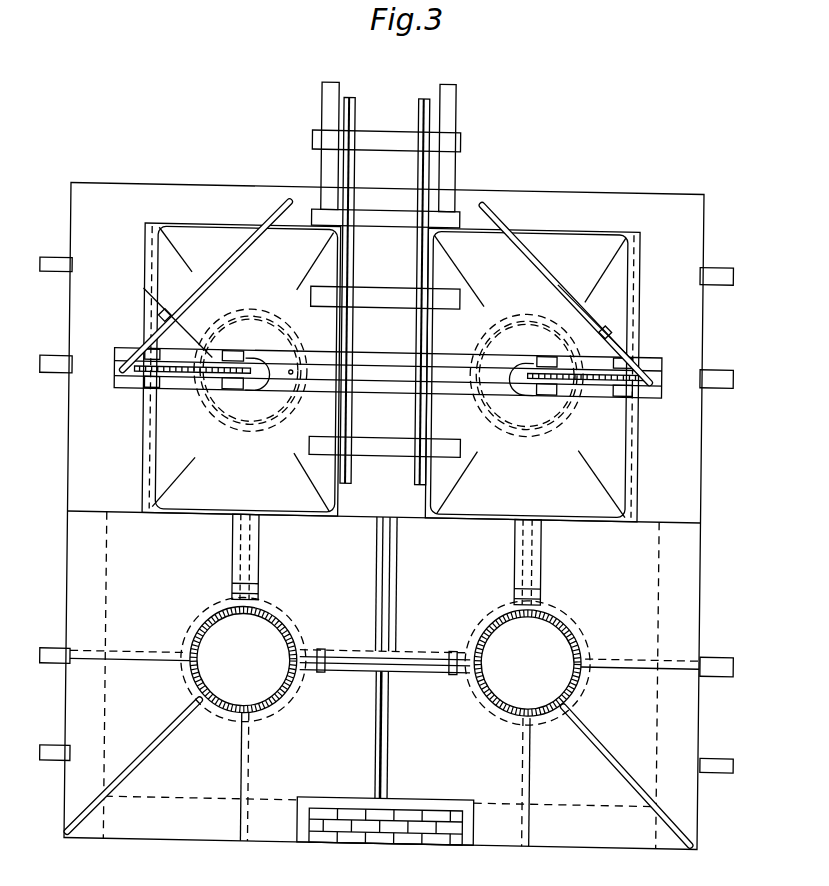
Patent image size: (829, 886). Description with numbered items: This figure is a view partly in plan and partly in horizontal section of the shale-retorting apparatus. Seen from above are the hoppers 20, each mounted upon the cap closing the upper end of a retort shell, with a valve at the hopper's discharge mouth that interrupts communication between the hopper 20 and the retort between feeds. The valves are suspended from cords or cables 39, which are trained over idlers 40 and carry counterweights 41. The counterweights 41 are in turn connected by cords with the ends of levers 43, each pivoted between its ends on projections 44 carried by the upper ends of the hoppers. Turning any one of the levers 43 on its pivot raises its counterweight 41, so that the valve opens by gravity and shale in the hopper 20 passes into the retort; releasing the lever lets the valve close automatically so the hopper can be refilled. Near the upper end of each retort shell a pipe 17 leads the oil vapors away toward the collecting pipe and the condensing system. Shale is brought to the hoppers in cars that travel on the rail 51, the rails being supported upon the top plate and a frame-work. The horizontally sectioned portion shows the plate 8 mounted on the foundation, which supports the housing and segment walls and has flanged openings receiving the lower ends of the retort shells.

The plate 8 is at (266, 326).
The pipe 17 is at (58, 374).
The hopper 20 is at (297, 345).
The cords or cables 39 is at (202, 389).
The idlers 40 is at (250, 346).
The counterweights 41 is at (127, 387).
The levers 43 is at (266, 224).
The projections 44 is at (198, 332).
The rail 51 is at (350, 128).